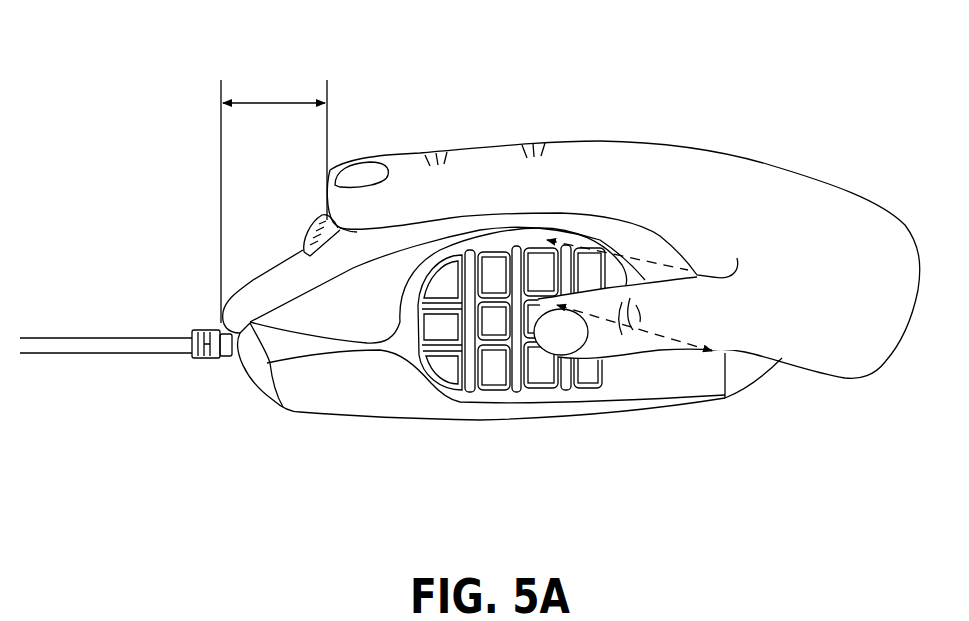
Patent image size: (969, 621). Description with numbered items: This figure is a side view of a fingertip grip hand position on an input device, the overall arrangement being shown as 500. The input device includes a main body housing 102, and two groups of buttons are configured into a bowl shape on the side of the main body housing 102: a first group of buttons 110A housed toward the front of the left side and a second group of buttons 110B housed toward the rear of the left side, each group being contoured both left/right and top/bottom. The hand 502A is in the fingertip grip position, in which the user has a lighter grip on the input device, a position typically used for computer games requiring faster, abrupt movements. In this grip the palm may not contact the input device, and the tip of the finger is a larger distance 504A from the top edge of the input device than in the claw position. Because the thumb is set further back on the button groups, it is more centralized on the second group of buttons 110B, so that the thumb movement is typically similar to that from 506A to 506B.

The computer mouse system 500 is at (157, 418).
The main body housing 102 is at (330, 417).
The first group of buttons 110A is at (452, 400).
The second group of buttons 110B is at (555, 393).
The thumb movement start position 506A is at (593, 372).
The thumb movement end position 506B is at (652, 340).
The hand 502A is at (808, 373).
The distance 504A is at (258, 100).